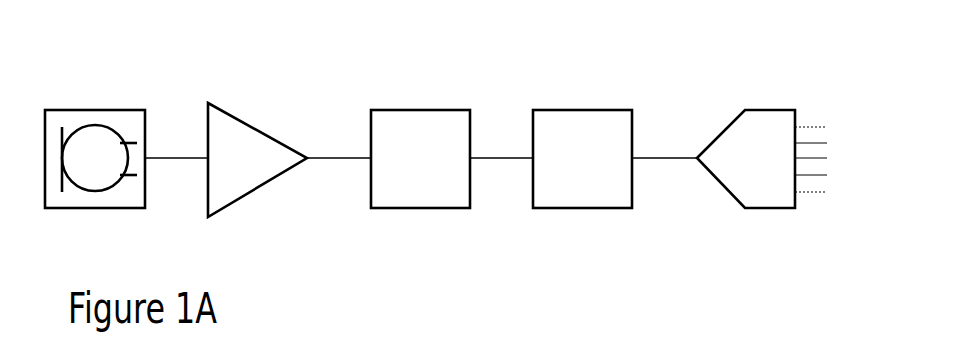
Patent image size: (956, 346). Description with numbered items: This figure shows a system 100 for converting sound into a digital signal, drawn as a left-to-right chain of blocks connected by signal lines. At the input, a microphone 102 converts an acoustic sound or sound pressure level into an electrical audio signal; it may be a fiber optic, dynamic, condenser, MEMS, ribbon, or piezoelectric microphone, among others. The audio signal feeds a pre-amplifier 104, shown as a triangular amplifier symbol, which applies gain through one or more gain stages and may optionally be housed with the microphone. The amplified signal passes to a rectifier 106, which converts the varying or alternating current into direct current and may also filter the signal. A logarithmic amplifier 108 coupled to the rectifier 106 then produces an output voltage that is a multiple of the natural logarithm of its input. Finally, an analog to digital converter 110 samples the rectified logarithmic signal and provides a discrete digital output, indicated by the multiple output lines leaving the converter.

The system 100 is at (173, 88).
The microphone 102 is at (108, 209).
The pre-amplifier 104 is at (247, 195).
The rectifier 106 is at (440, 210).
The logarithmic amplifier 108 is at (593, 210).
The analog to digital converter (ADC) 110 is at (765, 210).